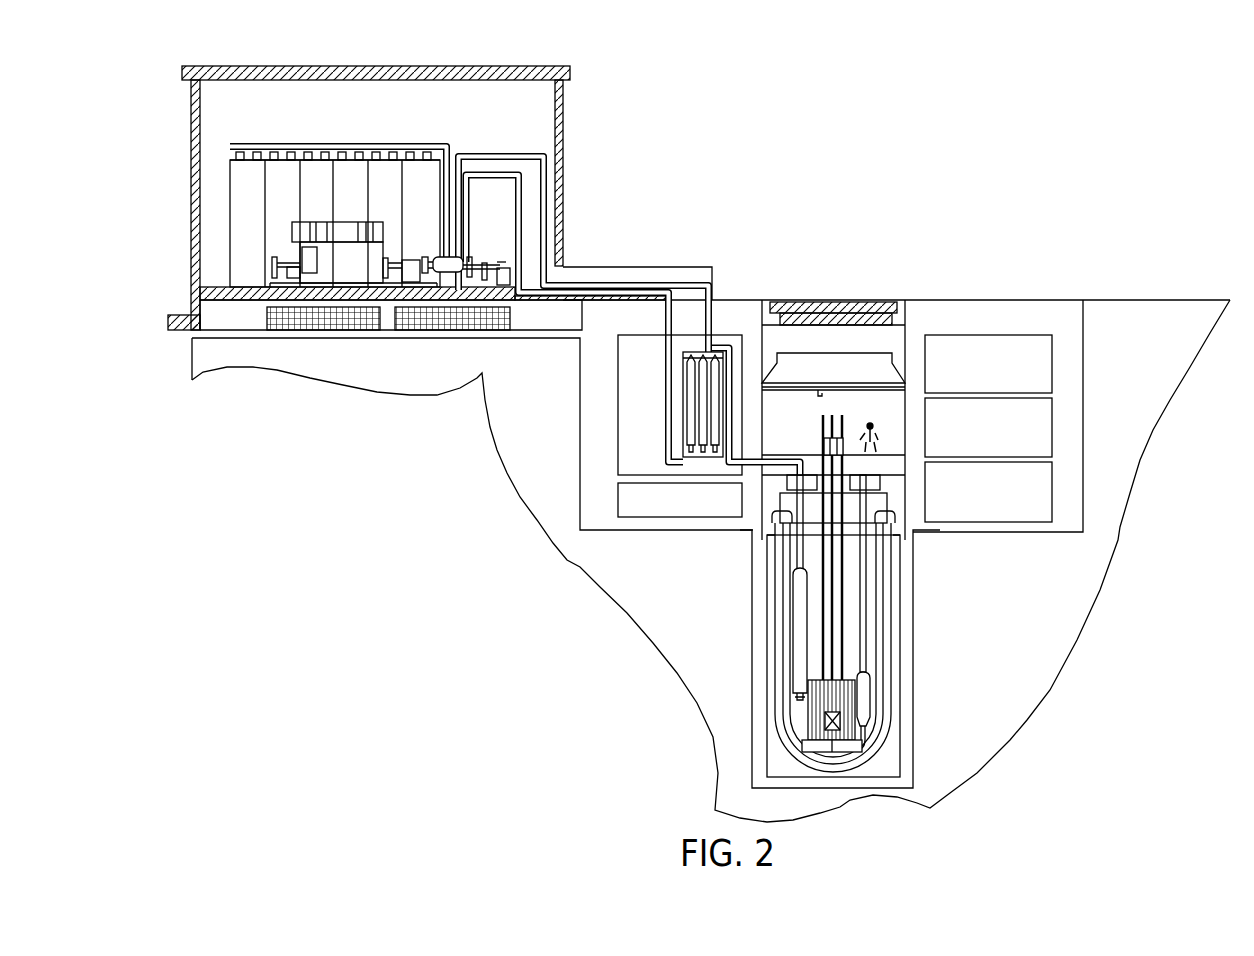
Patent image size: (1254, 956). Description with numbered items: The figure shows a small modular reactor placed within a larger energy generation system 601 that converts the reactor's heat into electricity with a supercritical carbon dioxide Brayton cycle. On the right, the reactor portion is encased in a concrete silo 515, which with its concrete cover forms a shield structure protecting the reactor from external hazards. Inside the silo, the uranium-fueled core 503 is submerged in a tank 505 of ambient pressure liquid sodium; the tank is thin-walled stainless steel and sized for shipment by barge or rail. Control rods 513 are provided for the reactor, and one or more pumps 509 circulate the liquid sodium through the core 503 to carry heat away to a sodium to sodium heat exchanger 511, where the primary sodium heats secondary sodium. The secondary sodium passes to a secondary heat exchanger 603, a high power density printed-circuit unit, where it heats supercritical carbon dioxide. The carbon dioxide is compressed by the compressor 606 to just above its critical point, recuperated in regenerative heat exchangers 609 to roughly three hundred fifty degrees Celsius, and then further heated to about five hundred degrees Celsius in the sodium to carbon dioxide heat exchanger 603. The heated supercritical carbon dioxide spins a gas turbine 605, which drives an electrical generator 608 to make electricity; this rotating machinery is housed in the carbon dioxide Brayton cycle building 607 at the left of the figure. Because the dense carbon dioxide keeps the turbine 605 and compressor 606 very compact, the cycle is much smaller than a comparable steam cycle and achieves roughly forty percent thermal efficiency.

The core 503 is at (830, 730).
The tank 505 is at (882, 598).
The pump 509 is at (880, 683).
The sodium to sodium heat exchanger 511 is at (797, 625).
The control rods 513 is at (830, 446).
The concrete silo 515 is at (1168, 300).
The energy generation system 601 is at (943, 250).
The secondary heat exchanger 603 is at (700, 430).
The gas turbine 605 is at (472, 245).
The compressor 606 is at (503, 260).
The carbon dioxide Brayton cycle building 607 is at (568, 68).
The electrical generator 608 is at (335, 232).
The regenerative heat exchangers 609 is at (320, 175).